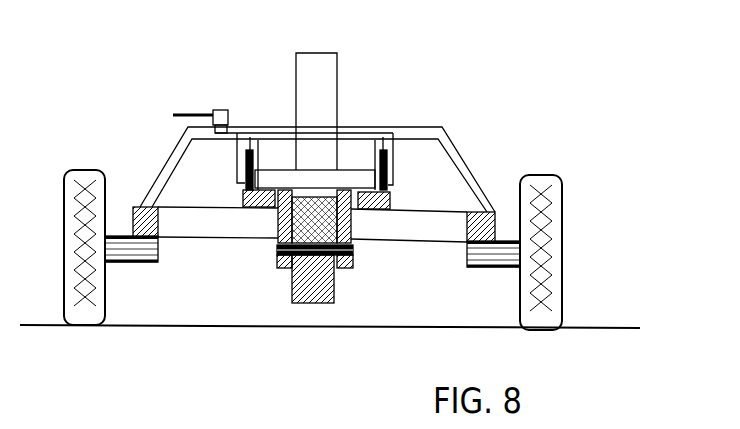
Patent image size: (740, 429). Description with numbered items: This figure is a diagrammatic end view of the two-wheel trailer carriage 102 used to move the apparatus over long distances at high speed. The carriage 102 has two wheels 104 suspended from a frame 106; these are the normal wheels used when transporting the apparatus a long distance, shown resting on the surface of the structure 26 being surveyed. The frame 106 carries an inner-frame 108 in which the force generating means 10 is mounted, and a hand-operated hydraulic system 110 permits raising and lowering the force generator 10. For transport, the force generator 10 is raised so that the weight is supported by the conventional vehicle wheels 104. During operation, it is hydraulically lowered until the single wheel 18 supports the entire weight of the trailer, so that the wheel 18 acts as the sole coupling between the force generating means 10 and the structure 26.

The force generating means 10 is at (337, 75).
The single wheel 18 is at (330, 246).
The structure 26 is at (439, 328).
The carriage 102 is at (208, 238).
The wheels 104 is at (64, 231).
The frame 106 is at (437, 211).
The inner-frame 108 is at (243, 196).
The hand-operated hydraulic system 110 is at (220, 110).